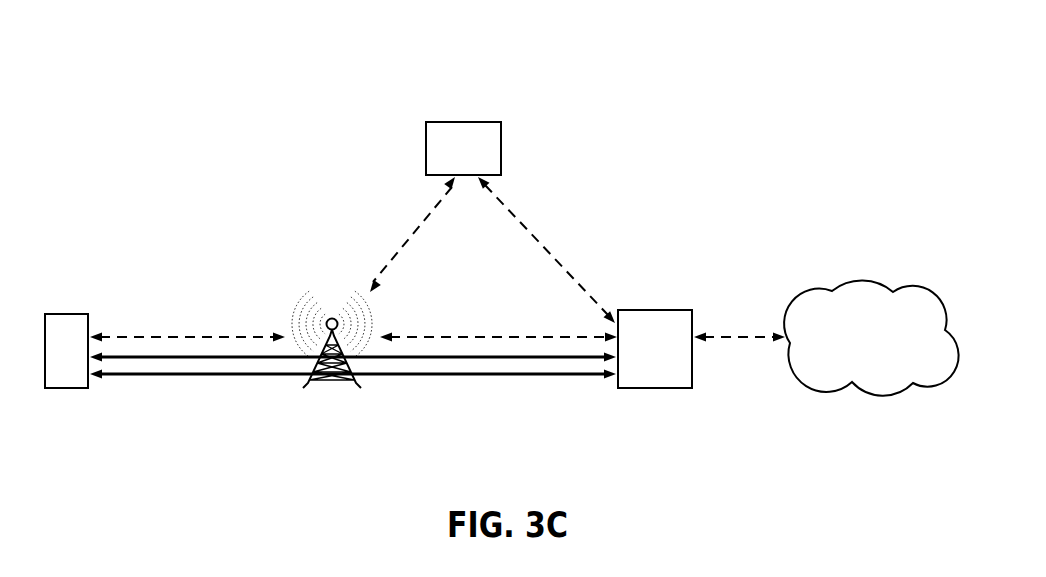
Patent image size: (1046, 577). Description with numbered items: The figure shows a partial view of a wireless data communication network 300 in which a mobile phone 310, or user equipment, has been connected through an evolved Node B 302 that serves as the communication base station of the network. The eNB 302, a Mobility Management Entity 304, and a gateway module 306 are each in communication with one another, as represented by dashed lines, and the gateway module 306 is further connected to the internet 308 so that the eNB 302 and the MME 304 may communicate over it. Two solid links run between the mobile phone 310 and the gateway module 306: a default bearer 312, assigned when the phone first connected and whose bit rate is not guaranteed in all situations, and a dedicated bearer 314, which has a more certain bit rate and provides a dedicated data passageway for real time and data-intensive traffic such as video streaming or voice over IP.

The wireless data communication network 300 is at (103, 46).
The evolved Node B (eNB) 302 is at (308, 405).
The Mobility Management Entity (MME) 304 is at (501, 150).
The gateway module 306 is at (652, 310).
The internet 308 is at (858, 281).
The mobile phone (UE) 310 is at (70, 314).
The default bearer 312 is at (505, 376).
The dedicated bearer 314 is at (423, 359).